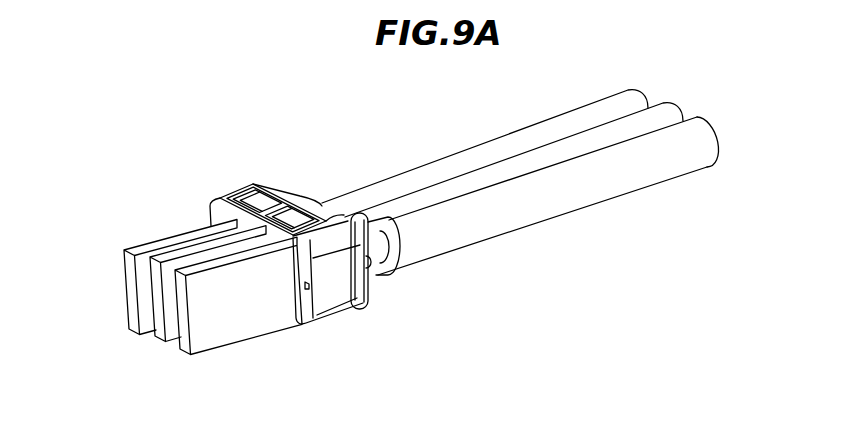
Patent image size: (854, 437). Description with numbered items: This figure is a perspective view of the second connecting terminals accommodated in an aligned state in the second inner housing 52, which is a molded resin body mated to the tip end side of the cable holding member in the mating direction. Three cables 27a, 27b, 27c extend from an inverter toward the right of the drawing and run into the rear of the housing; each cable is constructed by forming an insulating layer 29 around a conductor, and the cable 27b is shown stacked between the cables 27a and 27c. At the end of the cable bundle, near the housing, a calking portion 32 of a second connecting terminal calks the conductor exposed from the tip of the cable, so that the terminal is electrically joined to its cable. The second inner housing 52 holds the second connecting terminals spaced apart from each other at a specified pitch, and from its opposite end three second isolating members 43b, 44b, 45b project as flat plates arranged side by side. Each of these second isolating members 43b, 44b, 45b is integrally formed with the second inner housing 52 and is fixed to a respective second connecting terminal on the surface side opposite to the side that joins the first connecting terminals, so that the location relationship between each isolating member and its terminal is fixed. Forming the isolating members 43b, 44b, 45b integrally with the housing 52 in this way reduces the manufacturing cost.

The second inner housing 52 is at (213, 208).
The calking portion 32 is at (380, 274).
The cable 27a is at (432, 144).
The cable 27b is at (683, 100).
The cable 27c is at (556, 220).
The insulating layer 29 is at (637, 180).
The second isolating member 43b is at (133, 289).
The second isolating member 44b is at (154, 312).
The second isolating member 45b is at (183, 342).